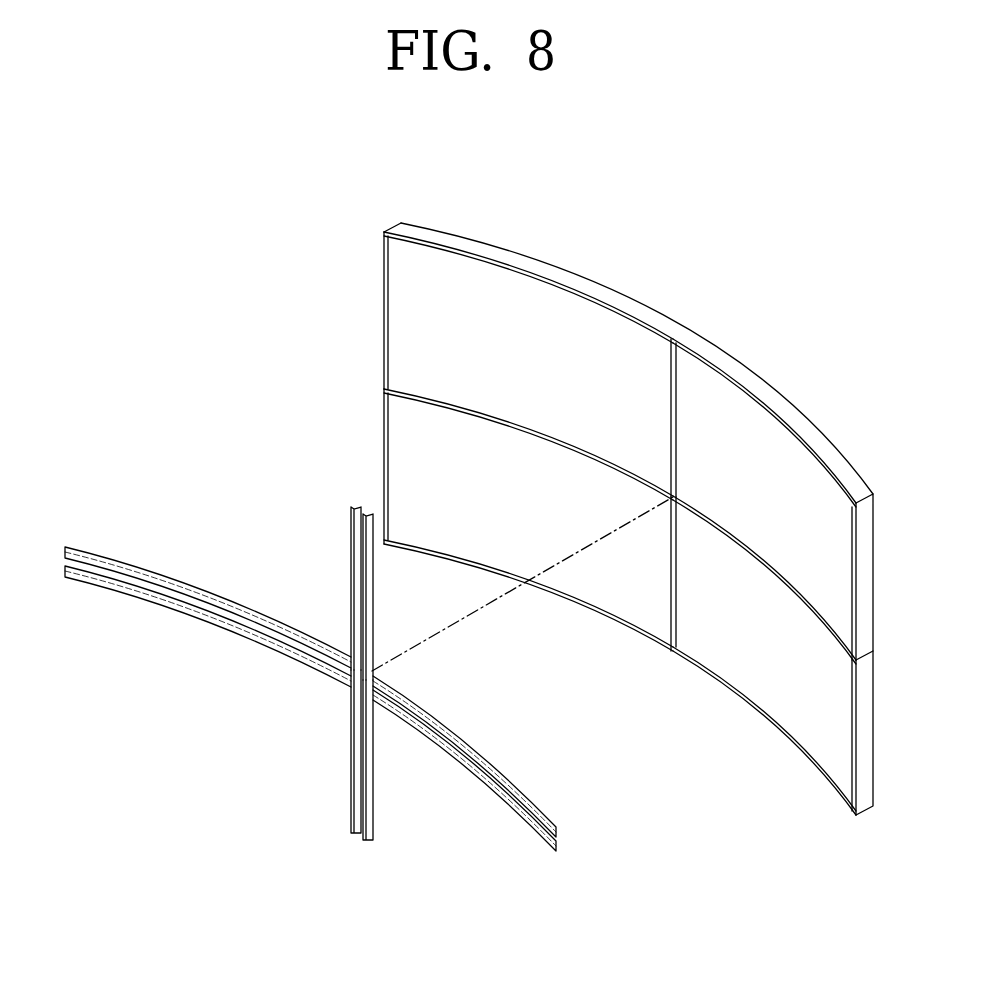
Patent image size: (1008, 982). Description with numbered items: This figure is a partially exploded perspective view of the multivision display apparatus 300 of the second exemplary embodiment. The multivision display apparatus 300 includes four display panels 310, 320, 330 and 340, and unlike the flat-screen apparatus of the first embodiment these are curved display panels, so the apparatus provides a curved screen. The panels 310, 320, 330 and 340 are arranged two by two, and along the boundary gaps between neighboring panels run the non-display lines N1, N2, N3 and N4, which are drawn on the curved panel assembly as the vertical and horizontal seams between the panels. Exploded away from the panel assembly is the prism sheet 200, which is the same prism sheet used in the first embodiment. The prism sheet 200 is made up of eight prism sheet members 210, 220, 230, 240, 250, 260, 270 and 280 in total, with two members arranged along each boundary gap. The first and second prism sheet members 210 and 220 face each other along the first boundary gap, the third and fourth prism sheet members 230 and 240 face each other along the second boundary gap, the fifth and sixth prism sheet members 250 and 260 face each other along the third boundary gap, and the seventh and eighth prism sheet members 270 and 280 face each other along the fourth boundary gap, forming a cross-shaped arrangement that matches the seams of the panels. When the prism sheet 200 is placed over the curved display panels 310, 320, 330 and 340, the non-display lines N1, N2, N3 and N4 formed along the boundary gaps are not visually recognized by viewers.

The multivision display apparatus 300 is at (409, 163).
The display panel 310 is at (411, 273).
The display panel 320 is at (833, 555).
The display panel 330 is at (836, 730).
The display panel 340 is at (411, 470).
The non-display line N1 is at (678, 372).
The non-display line N2 is at (817, 620).
The non-display line N3 is at (675, 635).
The non-display line N4 is at (403, 390).
The prism sheet 200 is at (318, 702).
The first prism sheet member 210 is at (354, 600).
The second prism sheet member 220 is at (372, 612).
The third prism sheet member 230 is at (503, 777).
The fourth prism sheet member 240 is at (498, 792).
The fifth prism sheet member 250 is at (355, 783).
The sixth prism sheet member 260 is at (373, 793).
The seventh prism sheet member 270 is at (150, 568).
The eighth prism sheet member 280 is at (147, 590).